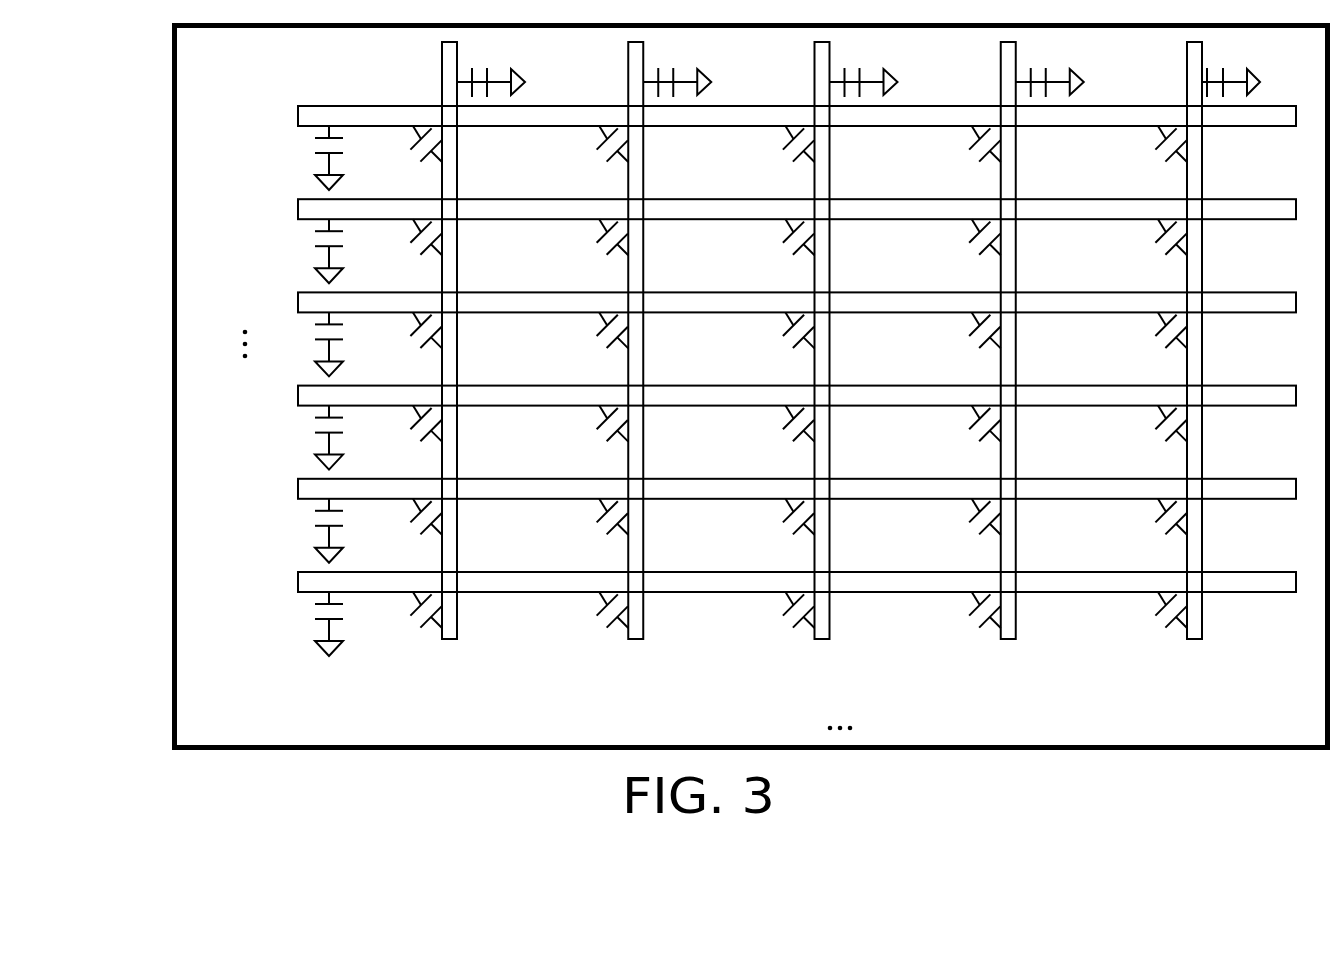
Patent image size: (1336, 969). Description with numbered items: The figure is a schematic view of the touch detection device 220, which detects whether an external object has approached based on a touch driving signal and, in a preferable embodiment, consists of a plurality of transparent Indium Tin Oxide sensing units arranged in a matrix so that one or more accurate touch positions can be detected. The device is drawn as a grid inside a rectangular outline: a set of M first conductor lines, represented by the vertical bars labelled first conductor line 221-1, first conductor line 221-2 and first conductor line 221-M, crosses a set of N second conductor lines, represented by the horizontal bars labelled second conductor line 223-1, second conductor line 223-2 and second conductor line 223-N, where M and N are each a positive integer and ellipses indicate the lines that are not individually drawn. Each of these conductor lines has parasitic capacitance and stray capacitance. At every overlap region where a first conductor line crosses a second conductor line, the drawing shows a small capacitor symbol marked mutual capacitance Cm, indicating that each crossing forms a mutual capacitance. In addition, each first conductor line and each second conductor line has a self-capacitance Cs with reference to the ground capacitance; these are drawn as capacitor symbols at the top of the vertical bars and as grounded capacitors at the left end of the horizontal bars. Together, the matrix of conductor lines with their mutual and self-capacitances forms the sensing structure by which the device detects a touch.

The touch detection device 220 is at (172, 55).
The second conductor line 223-1 is at (298, 118).
The second conductor line 223-2 is at (298, 211).
The second conductor line 223-N is at (298, 580).
The first conductor line 221-1 is at (452, 640).
The first conductor line 221-2 is at (638, 640).
The first conductor line 221-M is at (1197, 640).
The self-capacitance Cs is at (787, 348).
The mutual capacitance Cm is at (788, 388).